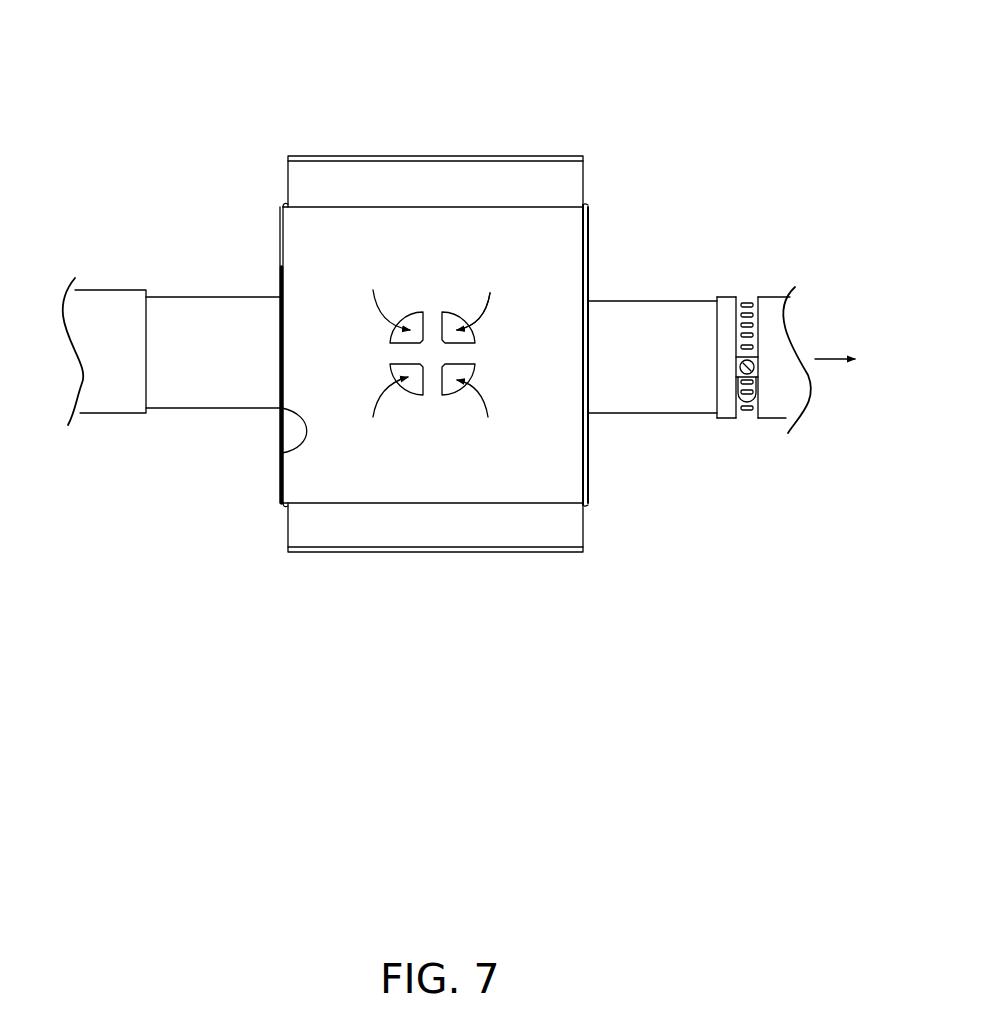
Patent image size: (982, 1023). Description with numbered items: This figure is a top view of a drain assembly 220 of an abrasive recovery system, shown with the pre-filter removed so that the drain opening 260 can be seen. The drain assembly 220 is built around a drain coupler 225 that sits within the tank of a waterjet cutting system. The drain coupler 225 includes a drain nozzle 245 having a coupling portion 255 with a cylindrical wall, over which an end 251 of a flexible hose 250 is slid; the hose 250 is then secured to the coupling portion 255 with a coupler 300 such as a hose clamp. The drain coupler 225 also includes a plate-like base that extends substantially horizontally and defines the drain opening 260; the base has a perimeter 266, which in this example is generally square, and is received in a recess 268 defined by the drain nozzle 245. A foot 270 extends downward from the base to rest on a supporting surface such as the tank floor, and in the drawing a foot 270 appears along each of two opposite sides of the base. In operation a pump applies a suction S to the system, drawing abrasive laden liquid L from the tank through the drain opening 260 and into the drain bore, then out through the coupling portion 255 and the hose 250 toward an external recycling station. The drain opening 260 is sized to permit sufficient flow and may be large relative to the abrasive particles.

The drain assembly 220 is at (721, 112).
The drain coupler 225 is at (194, 291).
The drain nozzle 245 is at (673, 296).
The flexible hose 250 is at (790, 390).
The end of hose 251 is at (715, 393).
The coupling portion 255 is at (612, 398).
The drain opening 260 is at (412, 294).
The perimeter 266 is at (278, 255).
The recess 268 is at (282, 453).
The foot 270 is at (431, 167).
The coupler 300 is at (745, 417).
The abrasive laden liquid L is at (490, 320).
The suction S is at (837, 358).